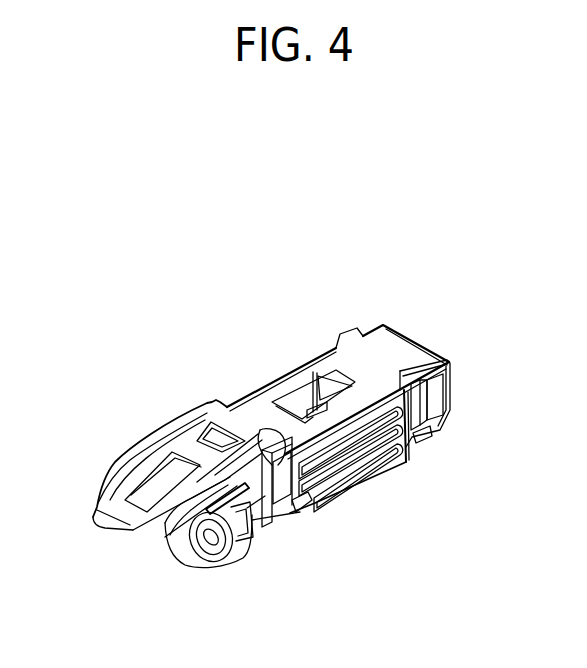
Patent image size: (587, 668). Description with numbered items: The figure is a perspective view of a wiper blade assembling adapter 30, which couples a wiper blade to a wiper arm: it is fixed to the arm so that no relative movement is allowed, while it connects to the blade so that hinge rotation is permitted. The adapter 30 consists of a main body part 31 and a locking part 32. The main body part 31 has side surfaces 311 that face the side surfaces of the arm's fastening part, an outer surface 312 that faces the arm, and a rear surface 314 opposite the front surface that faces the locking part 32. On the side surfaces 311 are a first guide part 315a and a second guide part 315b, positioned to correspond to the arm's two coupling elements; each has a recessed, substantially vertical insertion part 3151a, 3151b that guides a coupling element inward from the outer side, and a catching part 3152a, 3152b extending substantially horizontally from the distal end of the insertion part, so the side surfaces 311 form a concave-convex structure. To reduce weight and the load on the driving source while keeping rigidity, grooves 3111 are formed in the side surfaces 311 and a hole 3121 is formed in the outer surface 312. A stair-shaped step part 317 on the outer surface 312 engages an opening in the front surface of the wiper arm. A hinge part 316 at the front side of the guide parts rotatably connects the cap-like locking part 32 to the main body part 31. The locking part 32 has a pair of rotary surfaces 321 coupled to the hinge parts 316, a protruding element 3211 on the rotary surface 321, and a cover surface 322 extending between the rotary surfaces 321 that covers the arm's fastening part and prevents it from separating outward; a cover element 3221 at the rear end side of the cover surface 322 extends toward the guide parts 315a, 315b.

The adapter 30 is at (44, 219).
The main body part 31 is at (400, 347).
The side surfaces 311 is at (333, 495).
The grooves 3111 is at (362, 472).
The outer surface 312 is at (339, 348).
The hole 3121 is at (306, 399).
The rear surface 314 is at (455, 377).
The first guide part 315a is at (283, 517).
The second guide part 315b is at (413, 373).
The insertion part 3151a is at (267, 490).
The insertion part 3151b is at (440, 404).
The catching part 3152a is at (300, 505).
The catching part 3152b is at (420, 440).
The hinge part 316 is at (185, 562).
The step part 317 is at (259, 430).
The locking part 32 is at (117, 480).
The rotary surfaces 321 is at (163, 553).
The protruding element 3211 is at (140, 521).
The cover surface 322 is at (180, 437).
The cover element 3221 is at (217, 403).